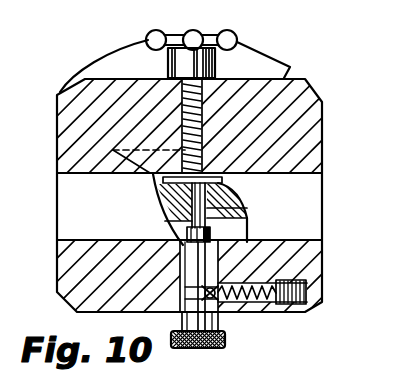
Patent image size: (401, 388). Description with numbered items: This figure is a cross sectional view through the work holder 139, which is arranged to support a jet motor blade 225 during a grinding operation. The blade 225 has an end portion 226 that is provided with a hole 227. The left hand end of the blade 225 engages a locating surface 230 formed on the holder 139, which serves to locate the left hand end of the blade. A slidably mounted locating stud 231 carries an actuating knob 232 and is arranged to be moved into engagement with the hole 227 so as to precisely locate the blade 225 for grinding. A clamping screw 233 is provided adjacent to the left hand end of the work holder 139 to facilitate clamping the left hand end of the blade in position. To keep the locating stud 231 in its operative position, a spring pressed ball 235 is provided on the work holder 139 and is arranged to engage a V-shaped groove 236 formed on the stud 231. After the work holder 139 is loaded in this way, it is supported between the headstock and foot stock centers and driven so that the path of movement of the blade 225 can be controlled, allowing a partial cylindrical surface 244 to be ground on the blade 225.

The work holder 139 is at (324, 106).
The clamping screw 233 is at (181, 60).
The hole 227 is at (242, 187).
The end portion 226 is at (180, 195).
The jet motor blade 225 is at (246, 206).
The locating stud 231 is at (248, 219).
The locating surface 230 is at (83, 241).
The V-shaped groove 236 is at (183, 313).
The partial cylindrical surface 244 is at (236, 264).
The spring pressed ball 235 is at (215, 300).
The actuating knob 232 is at (226, 340).